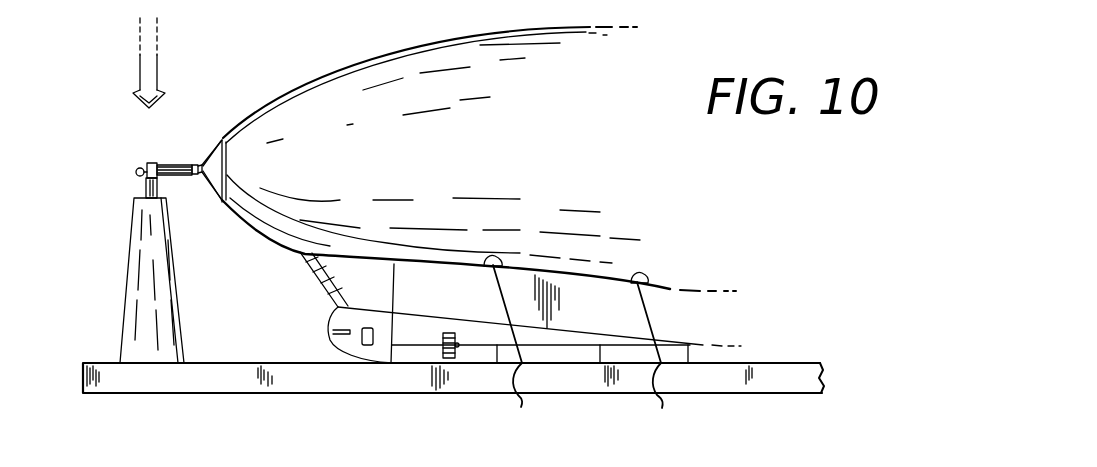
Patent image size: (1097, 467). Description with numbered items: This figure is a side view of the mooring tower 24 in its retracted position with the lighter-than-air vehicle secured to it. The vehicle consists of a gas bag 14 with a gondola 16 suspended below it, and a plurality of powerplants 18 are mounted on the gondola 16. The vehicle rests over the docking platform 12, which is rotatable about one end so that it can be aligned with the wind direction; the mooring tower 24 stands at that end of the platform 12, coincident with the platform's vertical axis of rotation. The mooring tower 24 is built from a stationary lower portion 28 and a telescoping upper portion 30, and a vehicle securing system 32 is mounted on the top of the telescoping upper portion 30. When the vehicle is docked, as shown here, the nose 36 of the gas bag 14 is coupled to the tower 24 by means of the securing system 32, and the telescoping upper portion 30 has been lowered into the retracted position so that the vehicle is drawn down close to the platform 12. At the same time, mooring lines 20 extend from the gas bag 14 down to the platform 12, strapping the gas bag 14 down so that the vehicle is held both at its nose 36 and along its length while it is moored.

The docking platform 12 is at (753, 364).
The gas bag 14 is at (366, 58).
The gondola 16 is at (330, 325).
The powerplants 18 is at (441, 358).
The mooring lines 20 is at (585, 348).
The mooring tower 24 is at (131, 250).
The stationary lower portion 28 is at (125, 312).
The telescoping upper portion 30 is at (142, 186).
The vehicle securing system 32 is at (171, 165).
The nose 36 is at (210, 188).